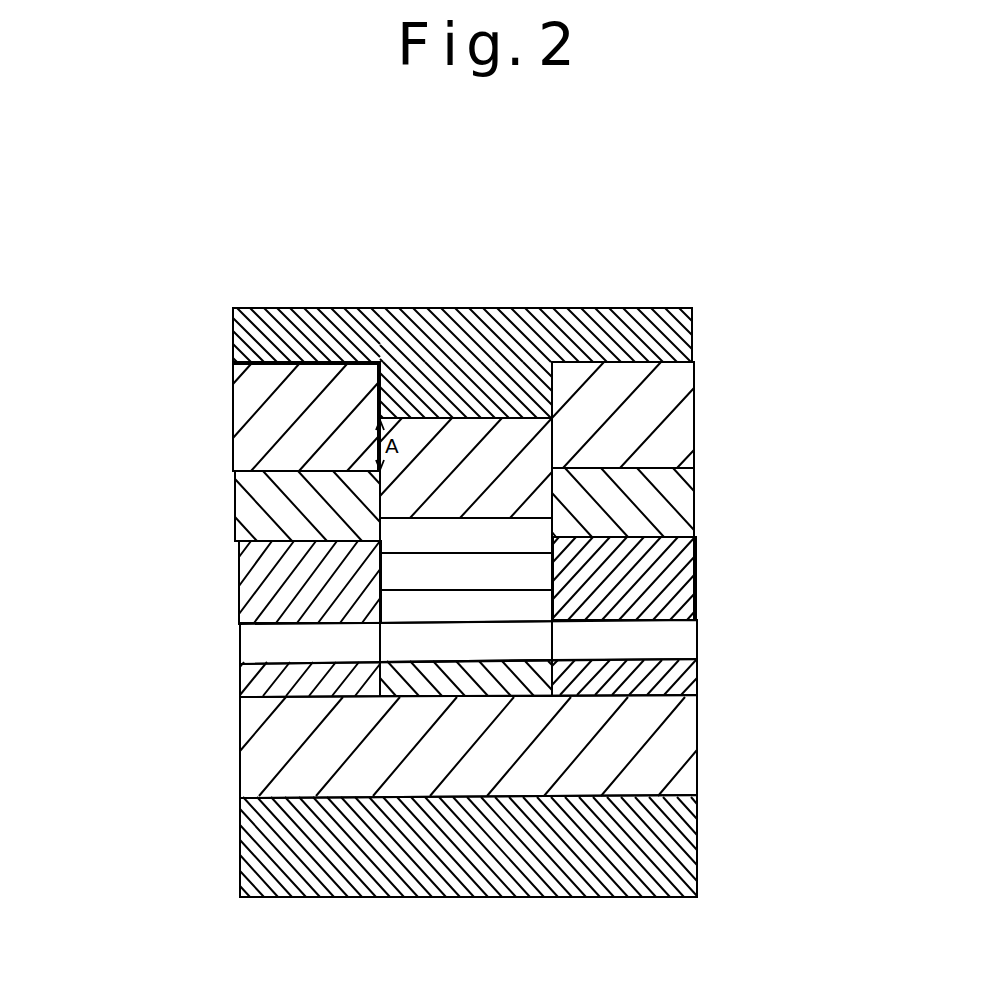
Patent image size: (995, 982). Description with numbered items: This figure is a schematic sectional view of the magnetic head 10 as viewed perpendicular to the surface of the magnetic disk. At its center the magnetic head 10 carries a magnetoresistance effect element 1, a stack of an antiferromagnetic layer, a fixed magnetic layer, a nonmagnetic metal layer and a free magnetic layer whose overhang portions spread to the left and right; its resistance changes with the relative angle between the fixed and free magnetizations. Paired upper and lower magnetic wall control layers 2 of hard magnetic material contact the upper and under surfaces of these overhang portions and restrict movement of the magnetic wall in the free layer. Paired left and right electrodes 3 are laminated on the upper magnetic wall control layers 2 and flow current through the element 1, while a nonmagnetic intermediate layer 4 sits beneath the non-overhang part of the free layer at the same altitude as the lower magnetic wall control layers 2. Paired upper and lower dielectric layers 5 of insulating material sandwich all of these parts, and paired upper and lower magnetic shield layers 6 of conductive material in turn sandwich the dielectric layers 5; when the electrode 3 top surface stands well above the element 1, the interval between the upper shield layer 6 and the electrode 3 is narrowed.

The magnetic head 10 is at (690, 242).
The magnetoresistance effect element 1 is at (782, 443).
The magnetic wall control layer 2 is at (610, 603).
The electrode 3 is at (667, 487).
The intermediate layer 4 is at (505, 683).
The dielectric layer 5 is at (258, 767).
The magnetic shield layer 6 is at (268, 850).